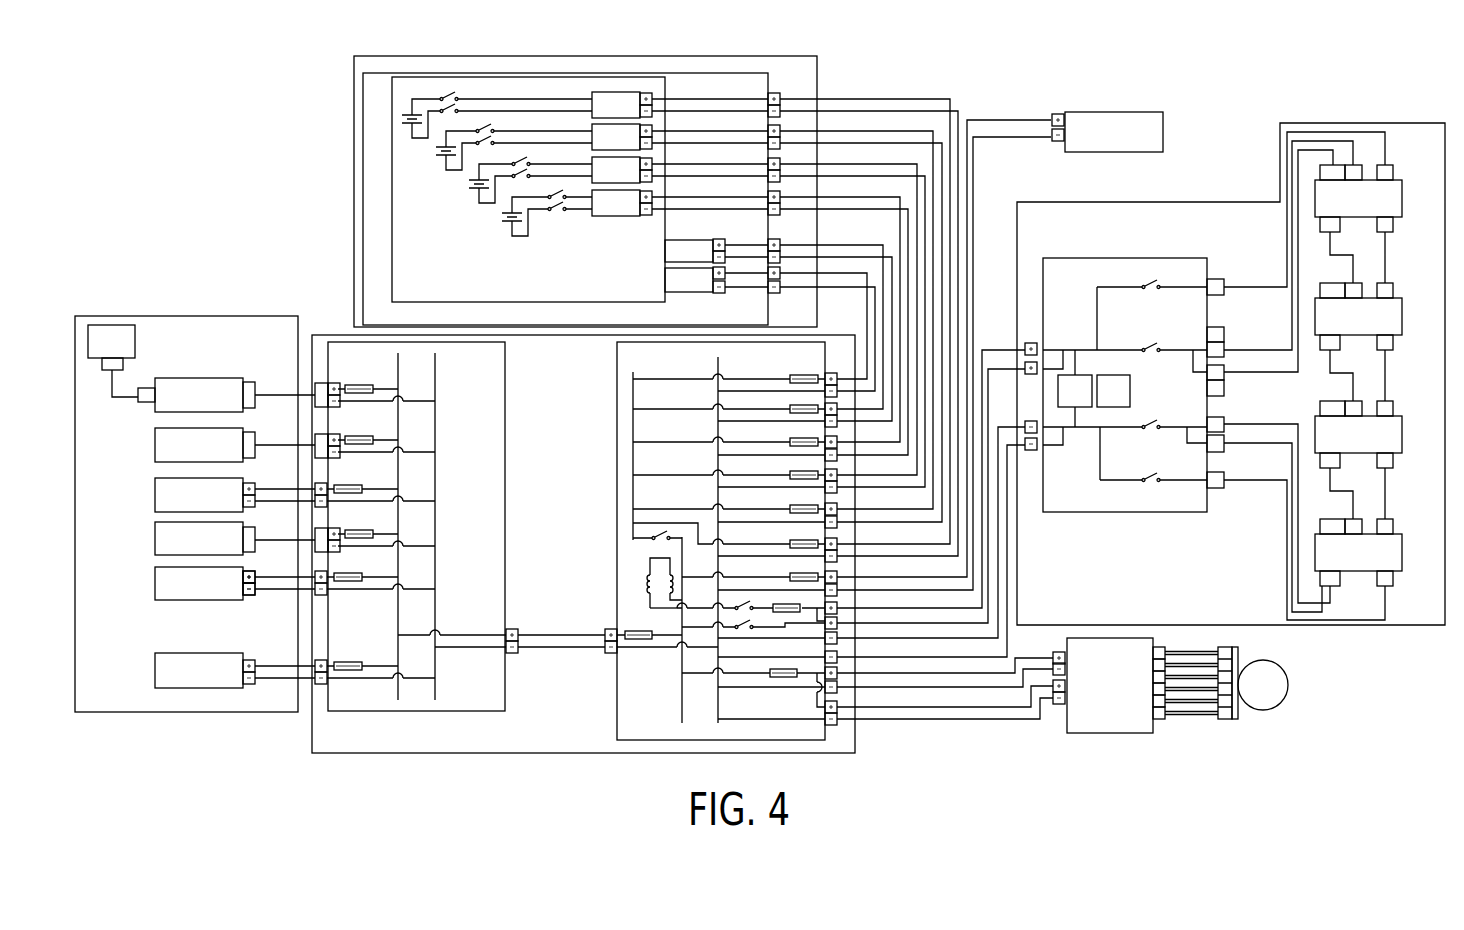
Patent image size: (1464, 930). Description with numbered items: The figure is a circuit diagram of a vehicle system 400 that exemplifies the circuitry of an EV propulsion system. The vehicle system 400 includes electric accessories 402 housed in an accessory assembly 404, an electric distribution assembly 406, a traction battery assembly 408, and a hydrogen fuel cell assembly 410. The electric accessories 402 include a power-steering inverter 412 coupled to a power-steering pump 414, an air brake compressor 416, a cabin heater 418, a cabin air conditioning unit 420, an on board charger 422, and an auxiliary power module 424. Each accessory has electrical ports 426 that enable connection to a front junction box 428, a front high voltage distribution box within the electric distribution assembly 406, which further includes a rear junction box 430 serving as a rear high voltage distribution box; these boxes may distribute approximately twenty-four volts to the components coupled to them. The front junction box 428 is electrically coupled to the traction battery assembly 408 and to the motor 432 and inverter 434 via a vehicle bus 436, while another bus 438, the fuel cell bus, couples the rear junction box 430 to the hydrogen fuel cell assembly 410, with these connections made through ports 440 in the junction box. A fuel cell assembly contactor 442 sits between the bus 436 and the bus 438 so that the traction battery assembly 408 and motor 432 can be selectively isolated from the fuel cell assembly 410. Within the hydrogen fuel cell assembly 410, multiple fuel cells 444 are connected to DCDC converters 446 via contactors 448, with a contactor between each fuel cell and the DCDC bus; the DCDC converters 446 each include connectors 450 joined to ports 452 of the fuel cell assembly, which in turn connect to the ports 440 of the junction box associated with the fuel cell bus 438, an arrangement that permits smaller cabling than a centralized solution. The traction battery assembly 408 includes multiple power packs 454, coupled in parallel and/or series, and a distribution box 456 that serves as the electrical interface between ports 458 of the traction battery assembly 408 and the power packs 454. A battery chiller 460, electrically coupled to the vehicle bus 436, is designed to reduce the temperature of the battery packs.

The vehicle system 400 is at (176, 134).
The electric accessories 402 is at (203, 364).
The accessory assembly 404 is at (119, 315).
The electric distribution assembly 406 is at (325, 753).
The traction battery assembly 408 is at (1082, 201).
The hydrogen fuel cell assembly 410 is at (407, 56).
The power-steering inverter 412 is at (174, 378).
The power-steering pump 414 is at (137, 351).
The air brake compressor 416 is at (155, 445).
The cabin heater 418 is at (155, 495).
The cabin air conditioning unit 420 is at (155, 540).
The on board charger 422 is at (155, 677).
The auxiliary power module 424 is at (155, 584).
The electrical ports 426 is at (247, 600).
The front junction box 428 is at (342, 712).
The rear junction box 430 is at (617, 735).
The motor 432 is at (1264, 711).
The inverter 434 is at (1110, 733).
The bus 436 is at (680, 700).
The bus 438 is at (617, 398).
The ports 440 is at (828, 375).
The fuel cell assembly contactor 442 is at (650, 542).
The fuel cells 444 is at (430, 146).
The DCDC converters 446 is at (627, 90).
The contactors 448 is at (458, 88).
The connectors 450 is at (651, 92).
The ports 452 is at (790, 79).
The power packs 454 is at (1403, 211).
The distribution box 456 is at (1143, 258).
The ports 458 is at (1033, 334).
The battery chiller 460 is at (1145, 106).